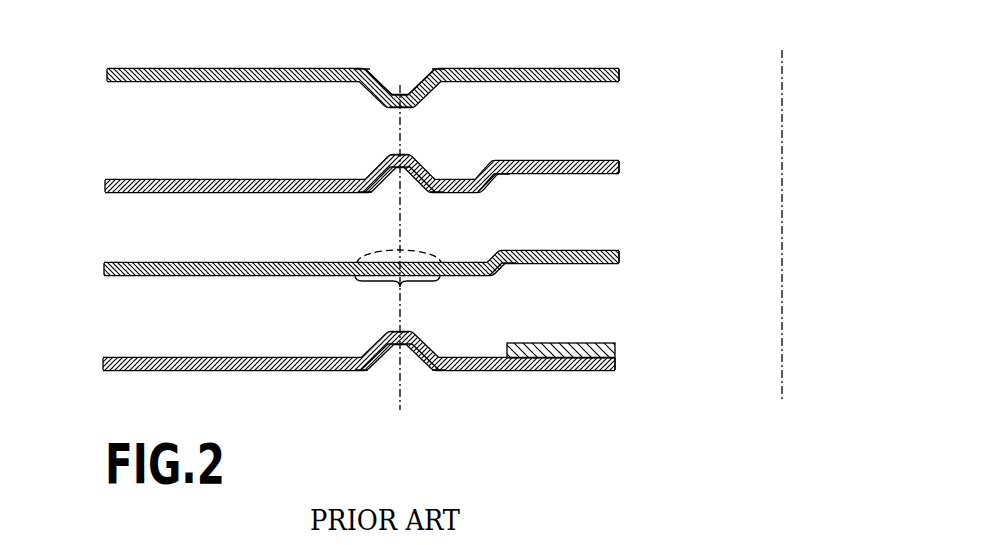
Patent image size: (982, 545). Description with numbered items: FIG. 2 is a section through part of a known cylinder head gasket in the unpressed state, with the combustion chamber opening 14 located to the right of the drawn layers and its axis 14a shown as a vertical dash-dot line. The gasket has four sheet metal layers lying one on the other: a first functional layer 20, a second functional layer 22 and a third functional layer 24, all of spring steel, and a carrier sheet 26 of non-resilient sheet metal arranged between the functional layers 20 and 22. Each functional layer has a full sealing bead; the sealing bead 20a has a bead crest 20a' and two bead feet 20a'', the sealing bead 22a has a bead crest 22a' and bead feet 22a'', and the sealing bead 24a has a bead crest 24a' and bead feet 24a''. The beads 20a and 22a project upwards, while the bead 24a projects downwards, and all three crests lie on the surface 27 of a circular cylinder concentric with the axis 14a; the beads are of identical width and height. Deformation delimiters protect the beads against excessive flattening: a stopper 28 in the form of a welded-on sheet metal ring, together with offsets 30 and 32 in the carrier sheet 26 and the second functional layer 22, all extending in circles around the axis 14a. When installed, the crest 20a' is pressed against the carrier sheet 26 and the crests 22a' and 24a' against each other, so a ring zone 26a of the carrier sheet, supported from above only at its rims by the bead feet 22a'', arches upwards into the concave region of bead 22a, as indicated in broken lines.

The combustion chamber opening 14 is at (675, 107).
The axis of the combustion chamber opening 14a is at (782, 222).
The first functional layer 20 is at (147, 370).
The sealing bead of the first functional layer 20a is at (454, 337).
The bead crest of the first functional layer 20a' is at (334, 326).
The bead feet of the first functional layer 20a'' is at (403, 397).
The second functional layer 22 is at (147, 192).
The sealing bead of the second functional layer 22a is at (456, 159).
The bead crest of the second functional layer 22a' is at (334, 161).
The bead feet of the second functional layer 22a'' is at (406, 208).
The third functional layer 24 is at (147, 81).
The sealing bead of the third functional layer 24a is at (456, 92).
The bead crest of the third functional layer 24a' is at (337, 97).
The bead feet of the third functional layer 24a'' is at (404, 46).
The carrier sheet 26 is at (147, 275).
The ring zone of the carrier sheet 26a is at (399, 287).
The surface of a circular cylinder 27 is at (400, 398).
The stopper 28 is at (615, 350).
The offset in the carrier sheet 30 is at (501, 264).
The offset in the second functional layer 32 is at (498, 176).